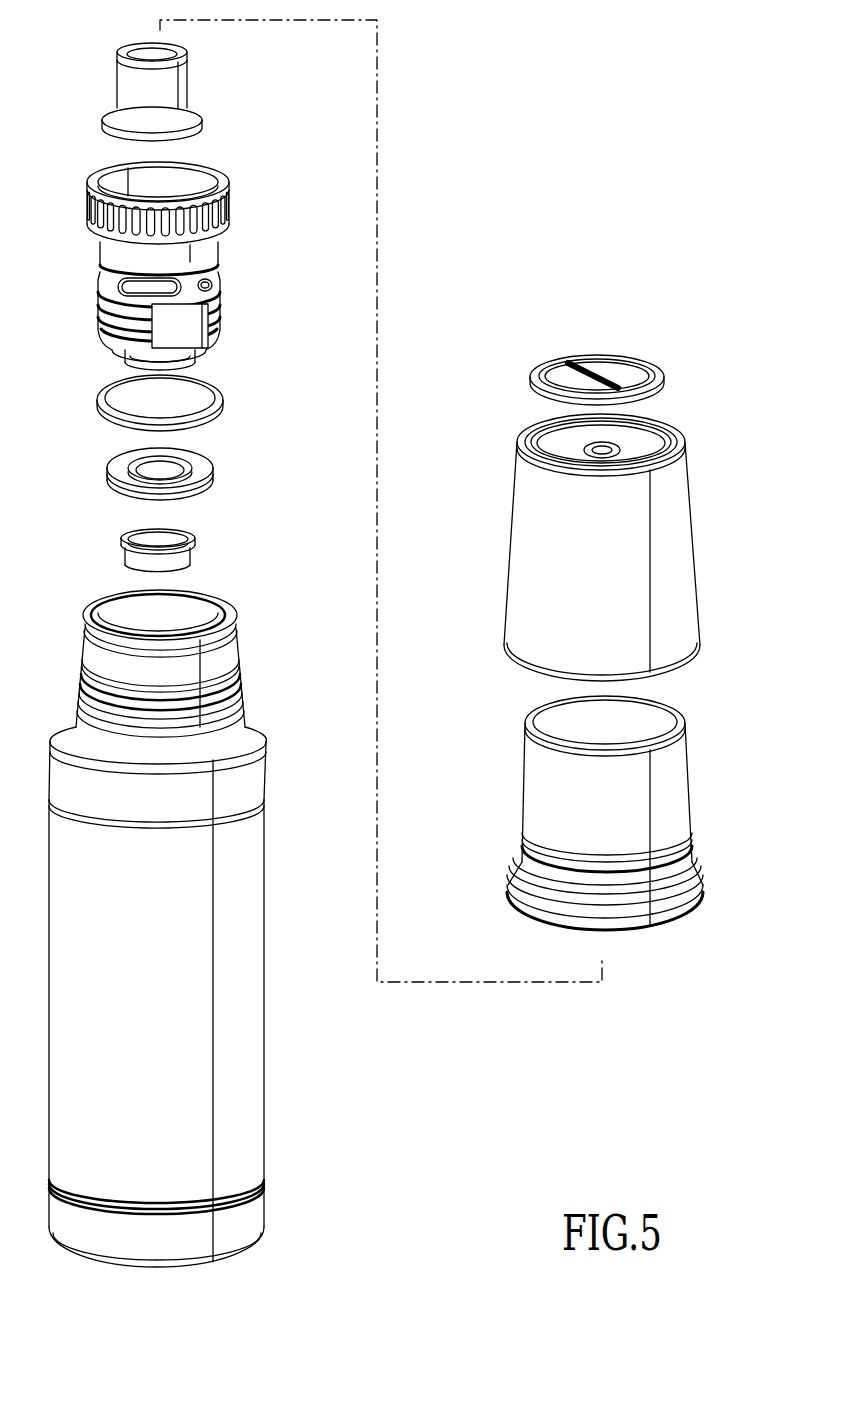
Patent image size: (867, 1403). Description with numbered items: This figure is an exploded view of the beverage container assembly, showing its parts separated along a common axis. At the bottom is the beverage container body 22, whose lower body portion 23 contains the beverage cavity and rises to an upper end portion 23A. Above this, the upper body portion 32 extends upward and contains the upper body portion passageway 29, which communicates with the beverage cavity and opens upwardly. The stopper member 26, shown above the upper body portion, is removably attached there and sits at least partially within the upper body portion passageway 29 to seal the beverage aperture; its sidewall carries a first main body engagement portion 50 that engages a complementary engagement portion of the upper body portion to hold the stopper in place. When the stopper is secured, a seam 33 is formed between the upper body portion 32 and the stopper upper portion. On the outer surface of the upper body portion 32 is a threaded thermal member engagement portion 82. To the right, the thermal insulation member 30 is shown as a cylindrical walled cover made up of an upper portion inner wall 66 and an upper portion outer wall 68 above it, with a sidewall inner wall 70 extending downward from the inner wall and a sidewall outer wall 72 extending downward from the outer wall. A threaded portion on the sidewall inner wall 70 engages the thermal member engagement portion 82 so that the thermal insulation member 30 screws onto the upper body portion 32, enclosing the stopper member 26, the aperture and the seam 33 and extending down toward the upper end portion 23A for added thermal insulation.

The beverage container body 22 is at (300, 1199).
The lower body portion 23 is at (266, 992).
The upper end portion 23A is at (255, 745).
The stopper member 26 is at (268, 188).
The upper body portion passageway 29 is at (138, 616).
The thermal insulation member 30 is at (695, 300).
The upper body portion 32 is at (238, 650).
The seam 33 is at (200, 591).
The first main body engagement portion 50 is at (240, 285).
The upper portion inner wall 66 is at (653, 723).
The upper portion outer wall 68 is at (650, 448).
The sidewall inner wall 70 is at (672, 512).
The sidewall outer wall 72 is at (672, 780).
The thermal member engagement portion 82 is at (245, 698).